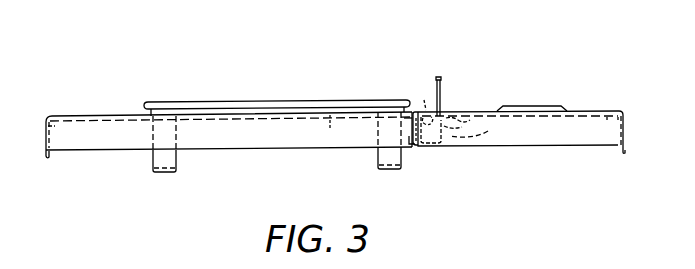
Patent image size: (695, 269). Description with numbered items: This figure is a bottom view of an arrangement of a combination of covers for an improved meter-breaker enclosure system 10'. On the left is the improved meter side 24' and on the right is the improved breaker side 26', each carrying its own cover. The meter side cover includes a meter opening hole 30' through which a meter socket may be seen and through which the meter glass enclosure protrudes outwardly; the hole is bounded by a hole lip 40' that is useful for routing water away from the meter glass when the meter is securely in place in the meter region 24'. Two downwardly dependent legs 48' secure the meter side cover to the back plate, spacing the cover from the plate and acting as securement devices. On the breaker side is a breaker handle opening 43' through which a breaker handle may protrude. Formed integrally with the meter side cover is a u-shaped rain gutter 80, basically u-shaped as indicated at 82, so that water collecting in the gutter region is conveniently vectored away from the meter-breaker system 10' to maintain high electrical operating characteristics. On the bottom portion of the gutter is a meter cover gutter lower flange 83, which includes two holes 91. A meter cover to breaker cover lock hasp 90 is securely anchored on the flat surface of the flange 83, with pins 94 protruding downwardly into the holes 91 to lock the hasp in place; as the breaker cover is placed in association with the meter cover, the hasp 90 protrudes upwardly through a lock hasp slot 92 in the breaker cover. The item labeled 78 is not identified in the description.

The meter-breaker enclosure system 10' is at (229, 152).
The meter side 24' is at (228, 104).
The breaker side 26' is at (545, 117).
The meter opening hole 30' is at (277, 91).
The hole lip 40' is at (138, 120).
The downwardly dependent legs 48' is at (420, 155).
The breaker handle opening 43' is at (550, 93).
The recess 78 is at (330, 115).
The u-shaped portion of gutter 82 is at (412, 119).
The u-shaped rain gutter 80 is at (439, 150).
The meter cover to breaker cover lock hasp 90 is at (437, 80).
The holes 91 is at (423, 98).
The meter cover to breaker cover lock hasp slot 92 is at (453, 113).
The meter cover gutter lower flange 83 is at (480, 118).
The pins 94 is at (490, 130).